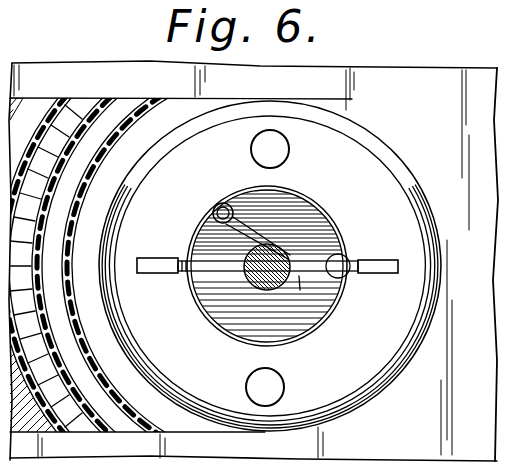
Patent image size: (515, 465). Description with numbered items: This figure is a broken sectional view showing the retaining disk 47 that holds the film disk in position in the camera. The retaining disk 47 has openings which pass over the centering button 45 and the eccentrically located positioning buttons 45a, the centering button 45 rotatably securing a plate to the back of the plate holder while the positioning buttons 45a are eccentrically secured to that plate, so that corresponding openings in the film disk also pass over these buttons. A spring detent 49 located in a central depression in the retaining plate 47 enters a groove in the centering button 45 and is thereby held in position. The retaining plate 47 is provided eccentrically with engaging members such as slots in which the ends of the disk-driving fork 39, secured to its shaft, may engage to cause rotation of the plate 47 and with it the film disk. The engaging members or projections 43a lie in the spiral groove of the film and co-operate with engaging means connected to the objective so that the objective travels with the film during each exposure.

The disk-driving fork 39 is at (183, 264).
The engaging members or projections 43a is at (82, 197).
The centering button 45 is at (265, 292).
The positioning buttons 45a is at (273, 153).
The retaining disk 47 is at (373, 198).
The spring detent 49 is at (214, 233).